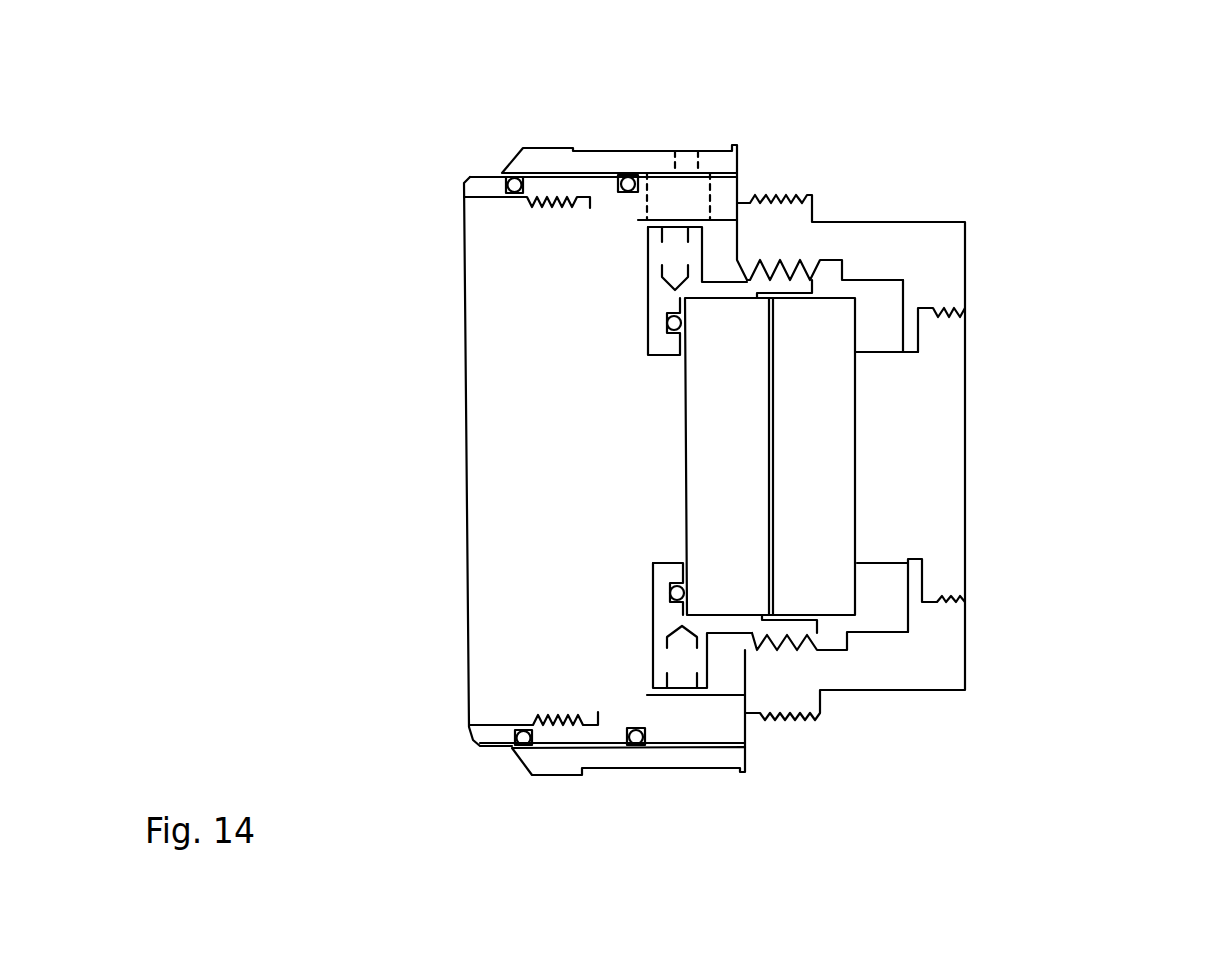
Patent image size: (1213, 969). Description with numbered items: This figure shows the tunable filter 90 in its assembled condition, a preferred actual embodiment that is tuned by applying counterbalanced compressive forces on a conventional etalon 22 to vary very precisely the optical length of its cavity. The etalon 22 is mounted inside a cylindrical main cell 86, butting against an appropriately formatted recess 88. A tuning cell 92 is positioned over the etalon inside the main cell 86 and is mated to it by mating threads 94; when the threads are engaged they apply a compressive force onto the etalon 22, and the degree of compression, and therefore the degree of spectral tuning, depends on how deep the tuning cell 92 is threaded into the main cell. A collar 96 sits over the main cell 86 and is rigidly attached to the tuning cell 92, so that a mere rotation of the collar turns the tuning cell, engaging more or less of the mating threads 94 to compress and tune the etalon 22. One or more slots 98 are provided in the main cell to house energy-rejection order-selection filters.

The etalon 22 is at (813, 588).
The main cell 86 is at (883, 232).
The recess 88 is at (855, 350).
The tunable filter 90 is at (1068, 148).
The tuning cell 92 is at (657, 300).
The mating threads 94 is at (780, 652).
The collar 96 is at (567, 163).
The slots 98 is at (662, 195).